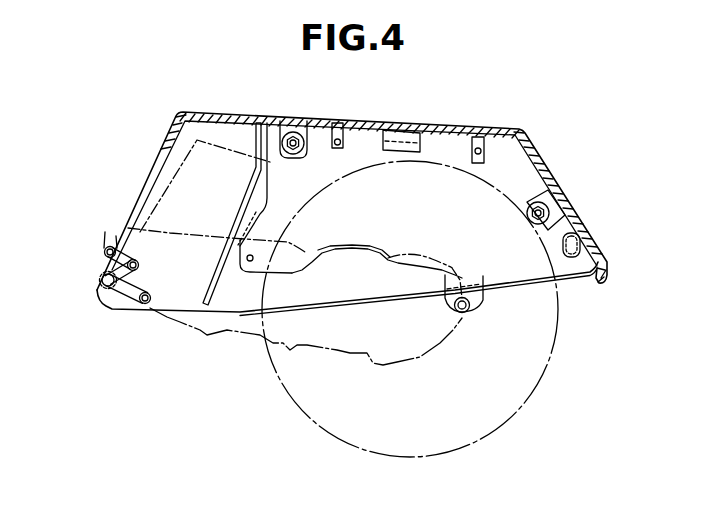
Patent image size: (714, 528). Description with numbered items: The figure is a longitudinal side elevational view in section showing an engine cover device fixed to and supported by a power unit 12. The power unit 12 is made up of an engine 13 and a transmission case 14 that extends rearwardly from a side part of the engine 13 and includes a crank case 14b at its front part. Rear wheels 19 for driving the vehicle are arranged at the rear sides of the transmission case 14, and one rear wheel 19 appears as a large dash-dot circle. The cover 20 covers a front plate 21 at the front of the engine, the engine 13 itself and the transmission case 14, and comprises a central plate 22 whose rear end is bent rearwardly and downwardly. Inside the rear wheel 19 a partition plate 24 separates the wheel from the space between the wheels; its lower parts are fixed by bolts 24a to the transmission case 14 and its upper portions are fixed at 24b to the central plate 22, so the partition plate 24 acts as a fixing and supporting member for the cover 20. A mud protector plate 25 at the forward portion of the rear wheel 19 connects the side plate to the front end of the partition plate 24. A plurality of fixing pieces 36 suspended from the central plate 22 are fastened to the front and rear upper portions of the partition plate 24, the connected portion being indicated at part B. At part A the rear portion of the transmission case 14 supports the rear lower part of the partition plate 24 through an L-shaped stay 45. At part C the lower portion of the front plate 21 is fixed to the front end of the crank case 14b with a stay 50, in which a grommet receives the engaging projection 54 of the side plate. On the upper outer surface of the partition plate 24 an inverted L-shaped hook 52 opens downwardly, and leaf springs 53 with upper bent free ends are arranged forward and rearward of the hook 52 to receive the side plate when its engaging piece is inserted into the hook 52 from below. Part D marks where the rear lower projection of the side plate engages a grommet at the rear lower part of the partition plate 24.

The power unit 12 is at (200, 332).
The engine 13 is at (163, 188).
The transmission case 14 is at (286, 358).
The crank case 14b is at (128, 228).
The rear wheel 19 is at (500, 412).
The cover 20 is at (196, 108).
The front plate 21 is at (170, 131).
The central plate 22 is at (218, 112).
The partition plate 24 is at (322, 256).
The bolt 24a is at (251, 265).
The upper fixing point 24b is at (293, 155).
The mud protector plate 25 is at (228, 262).
The fixing piece 36 is at (298, 122).
The L-shaped stay 45 is at (485, 296).
The stay 50 is at (128, 296).
The hook 52 is at (405, 130).
The spring 53 is at (340, 125).
The engaging projection 54 is at (101, 273).
The part A is at (464, 322).
The part B is at (273, 159).
The part C is at (97, 295).
The part D is at (579, 265).